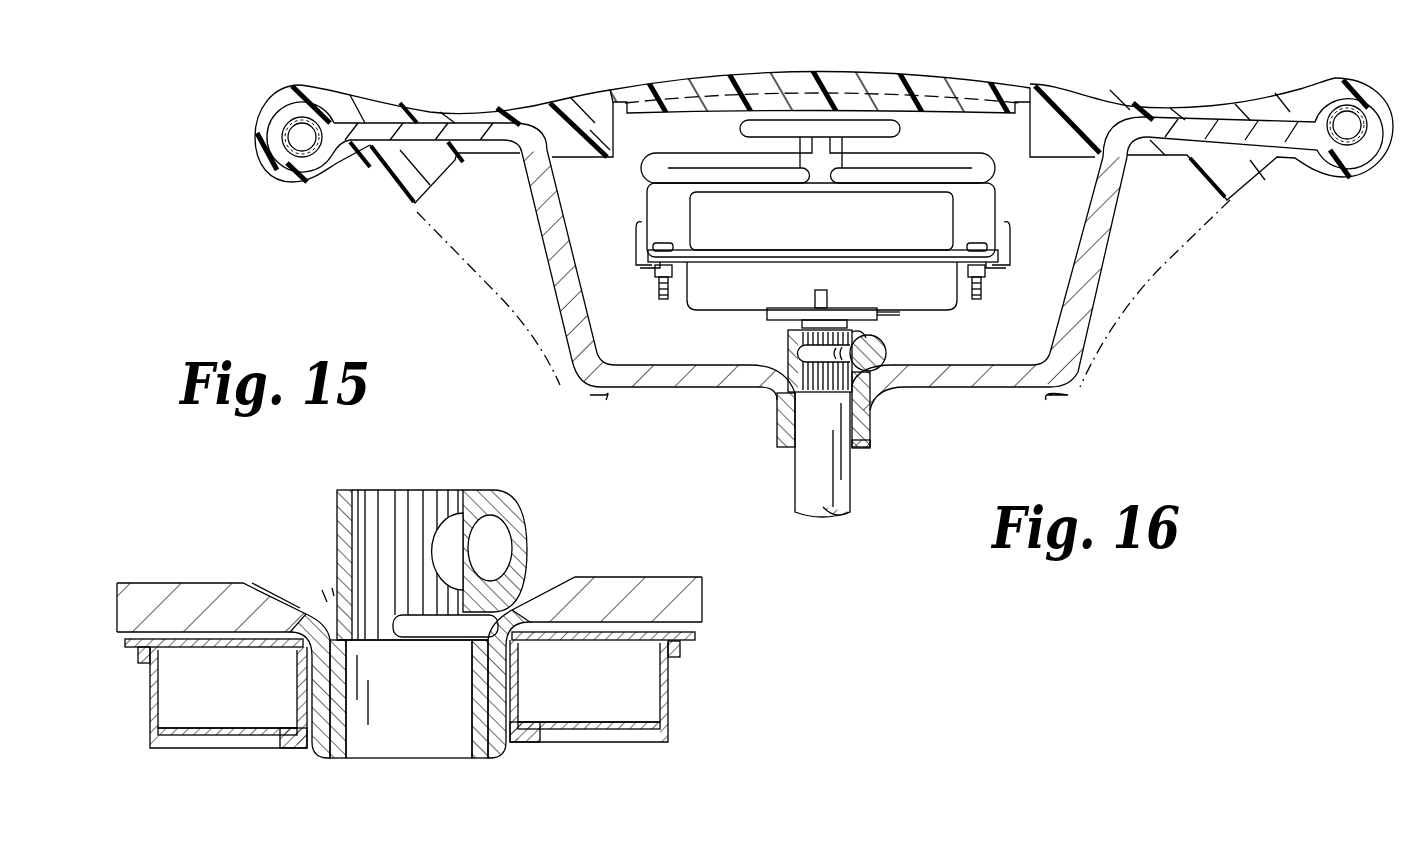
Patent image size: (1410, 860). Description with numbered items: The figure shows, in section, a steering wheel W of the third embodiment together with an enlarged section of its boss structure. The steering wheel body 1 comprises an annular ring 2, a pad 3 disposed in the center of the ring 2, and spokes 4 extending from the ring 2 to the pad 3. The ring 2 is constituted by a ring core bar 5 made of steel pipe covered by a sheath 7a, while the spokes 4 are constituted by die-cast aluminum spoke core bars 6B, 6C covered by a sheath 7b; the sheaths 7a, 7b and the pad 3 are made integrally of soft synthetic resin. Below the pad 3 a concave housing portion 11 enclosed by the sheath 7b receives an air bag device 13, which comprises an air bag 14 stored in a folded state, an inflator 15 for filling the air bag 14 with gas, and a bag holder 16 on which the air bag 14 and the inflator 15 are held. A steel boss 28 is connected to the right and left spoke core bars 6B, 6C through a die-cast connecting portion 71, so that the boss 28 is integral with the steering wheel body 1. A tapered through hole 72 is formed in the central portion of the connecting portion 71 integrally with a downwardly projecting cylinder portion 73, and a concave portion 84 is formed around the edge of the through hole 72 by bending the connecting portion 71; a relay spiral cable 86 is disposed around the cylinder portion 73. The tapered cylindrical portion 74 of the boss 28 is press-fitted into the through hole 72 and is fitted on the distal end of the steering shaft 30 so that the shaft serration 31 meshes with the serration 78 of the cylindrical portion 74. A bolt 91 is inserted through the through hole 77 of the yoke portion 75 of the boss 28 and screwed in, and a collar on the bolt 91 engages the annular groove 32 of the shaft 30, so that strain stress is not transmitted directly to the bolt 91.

In FIG. 16, the steering wheel W is at (1097, 34).
In FIG. 16, the steering wheel body 1 is at (586, 56).
In FIG. 16, the annular ring 2 is at (300, 92).
In FIG. 16, the pad 3 is at (806, 70).
In FIG. 16, the spokes 4 is at (418, 110).
In FIG. 16, the ring core bar 5 is at (290, 165).
In FIG. 16, the spoke core bar 6B is at (375, 152).
In FIG. 16, the spoke core bar 6C is at (1283, 152).
In FIG. 16, the sheath 7a is at (258, 122).
In FIG. 16, the sheath 7b is at (413, 192).
In FIG. 16, the concave housing portion 11 is at (982, 139).
In FIG. 16, the air bag device 13 is at (648, 323).
In FIG. 16, the air bag 14 is at (998, 165).
In FIG. 16, the inflator 15 is at (958, 210).
In FIG. 16, the bag holder 16 is at (1014, 244).
In FIG. 16, the boss 28 is at (823, 419).
In FIG. 15, the boss 28 is at (322, 478).
In FIG. 16, the steering shaft 30 is at (852, 505).
In FIG. 16, the serration 31 is at (822, 385).
In FIG. 16, the annular groove 32 is at (806, 353).
In FIG. 16, the connecting portion 71 is at (982, 392).
In FIG. 15, the connecting portion 71 is at (705, 590).
In FIG. 16, the through hole 72 is at (872, 438).
In FIG. 15, the through hole 72 is at (336, 758).
In FIG. 16, the cylinder portion 73 is at (872, 408).
In FIG. 15, the cylinder portion 73 is at (314, 750).
In FIG. 16, the cylindrical portion 74 is at (778, 424).
In FIG. 15, the cylindrical portion 74 is at (478, 745).
In FIG. 16, the yoke portion 75 is at (868, 334).
In FIG. 15, the yoke portion 75 is at (472, 490).
In FIG. 15, the through hole 77 is at (502, 548).
In FIG. 15, the serration 78 is at (378, 505).
In FIG. 16, the concave portion 84 is at (786, 352).
In FIG. 15, the concave portion 84 is at (314, 582).
In FIG. 15, the relay spiral cable 86 is at (570, 758).
In FIG. 16, the bolt 91 is at (888, 353).